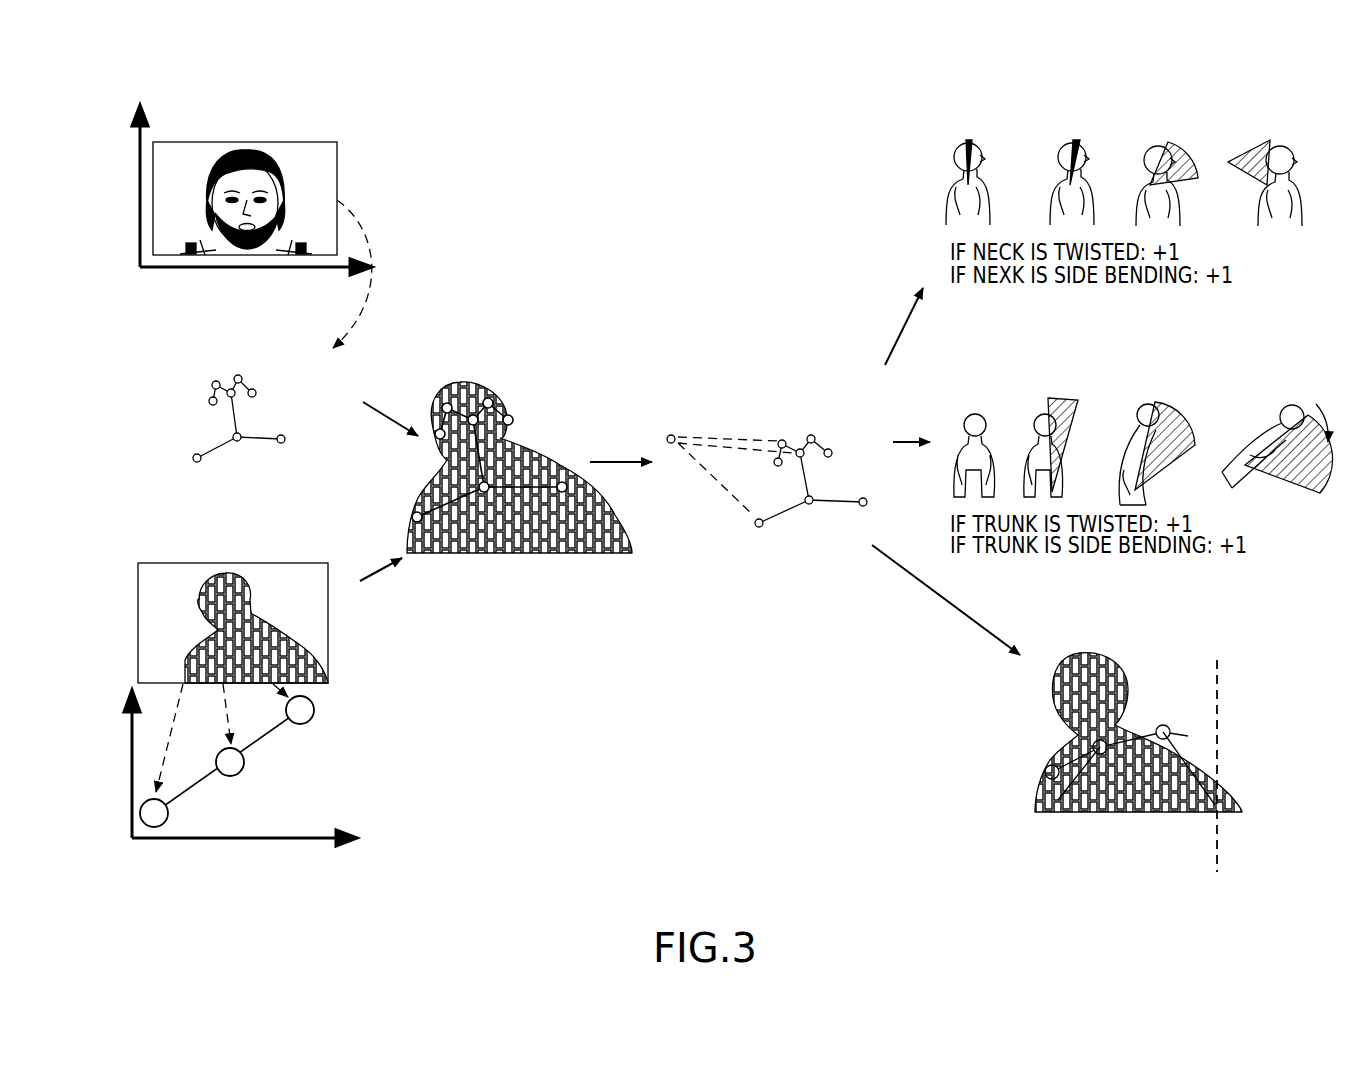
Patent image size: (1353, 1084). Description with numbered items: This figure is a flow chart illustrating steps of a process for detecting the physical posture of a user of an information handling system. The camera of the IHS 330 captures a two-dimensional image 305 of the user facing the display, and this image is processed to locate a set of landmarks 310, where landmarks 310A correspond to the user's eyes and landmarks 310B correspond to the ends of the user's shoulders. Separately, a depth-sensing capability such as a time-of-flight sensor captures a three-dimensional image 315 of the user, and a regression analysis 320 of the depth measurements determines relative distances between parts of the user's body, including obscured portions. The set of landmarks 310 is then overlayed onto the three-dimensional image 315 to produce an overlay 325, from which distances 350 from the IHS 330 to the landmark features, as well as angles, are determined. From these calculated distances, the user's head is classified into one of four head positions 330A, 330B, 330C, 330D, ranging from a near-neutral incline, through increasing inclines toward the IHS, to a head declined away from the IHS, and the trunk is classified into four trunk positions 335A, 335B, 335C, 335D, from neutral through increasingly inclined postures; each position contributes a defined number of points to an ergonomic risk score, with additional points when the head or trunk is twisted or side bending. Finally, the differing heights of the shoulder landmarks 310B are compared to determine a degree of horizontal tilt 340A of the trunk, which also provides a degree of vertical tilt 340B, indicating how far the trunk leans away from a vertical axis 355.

The two-dimensional image 305 is at (210, 160).
The landmarks 310 is at (498, 404).
The eye landmarks 310A is at (214, 378).
The shoulder landmarks 310B is at (198, 466).
The three-dimensional image 315 is at (208, 586).
The regression analysis 320 is at (270, 744).
The overlay 325 is at (518, 430).
The IHS 330 is at (666, 430).
The head position 330A is at (757, 420).
The head position 330B is at (1079, 106).
The head position 330C is at (1164, 106).
The head position 330D is at (1261, 106).
The trunk position 335A is at (977, 370).
The trunk position 335B is at (1079, 370).
The trunk position 335C is at (1164, 370).
The trunk position 335D is at (1261, 370).
The degree of horizontal tilt 340A is at (1072, 788).
The degree of vertical tilt 340B is at (1207, 792).
The distances 350 is at (714, 407).
The vertical axis 355 is at (1232, 811).